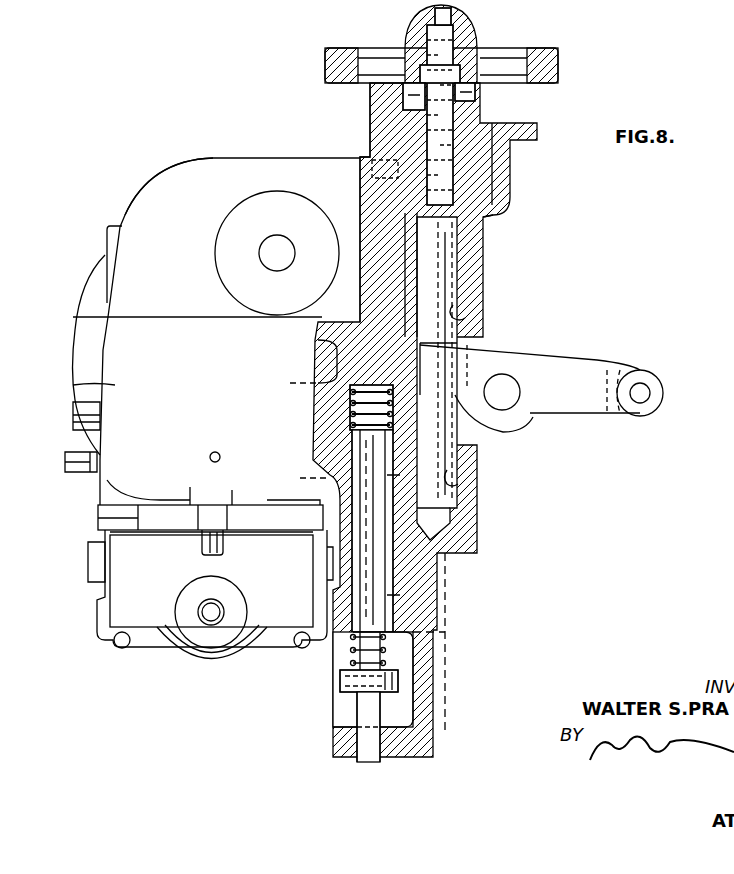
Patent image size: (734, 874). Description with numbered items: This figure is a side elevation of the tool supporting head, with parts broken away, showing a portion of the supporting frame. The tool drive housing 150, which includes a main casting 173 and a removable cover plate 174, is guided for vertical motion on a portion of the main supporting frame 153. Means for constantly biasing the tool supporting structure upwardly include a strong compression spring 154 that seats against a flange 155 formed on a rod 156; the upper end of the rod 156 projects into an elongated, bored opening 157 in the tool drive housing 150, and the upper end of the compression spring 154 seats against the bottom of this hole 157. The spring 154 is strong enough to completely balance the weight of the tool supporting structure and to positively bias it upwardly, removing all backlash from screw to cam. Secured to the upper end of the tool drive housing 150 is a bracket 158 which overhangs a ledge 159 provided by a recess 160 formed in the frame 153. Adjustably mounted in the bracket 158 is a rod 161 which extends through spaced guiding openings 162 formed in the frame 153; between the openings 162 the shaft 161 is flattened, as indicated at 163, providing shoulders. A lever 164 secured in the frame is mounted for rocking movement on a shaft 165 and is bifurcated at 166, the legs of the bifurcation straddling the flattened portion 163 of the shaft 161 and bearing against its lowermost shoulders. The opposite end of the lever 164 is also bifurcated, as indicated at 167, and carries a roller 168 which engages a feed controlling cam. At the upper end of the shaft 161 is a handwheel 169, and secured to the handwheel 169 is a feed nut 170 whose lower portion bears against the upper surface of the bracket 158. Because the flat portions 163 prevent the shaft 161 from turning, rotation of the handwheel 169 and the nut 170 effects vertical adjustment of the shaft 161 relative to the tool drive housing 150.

The tool drive housing 150 is at (220, 150).
The main supporting frame 153 is at (483, 297).
The compression spring 154 is at (347, 653).
The flange 155 is at (340, 683).
The rod 156 is at (363, 715).
The elongated bored opening 157 is at (400, 598).
The bracket 158 is at (375, 135).
The ledge 159 is at (481, 212).
The recess 160 is at (483, 172).
The rod (shaft) 161 is at (438, 273).
The guiding openings 162 is at (453, 312).
The flattened portion 163 is at (440, 343).
The lever 164 is at (573, 377).
The shaft 165 is at (507, 398).
The bifurcation 166 is at (480, 430).
The bifurcated end 167 is at (617, 368).
The roller 168 is at (665, 395).
The handwheel 169 is at (560, 73).
The feed nut 170 is at (470, 122).
The main casting 173 is at (113, 386).
The removable cover plate 174 is at (165, 205).